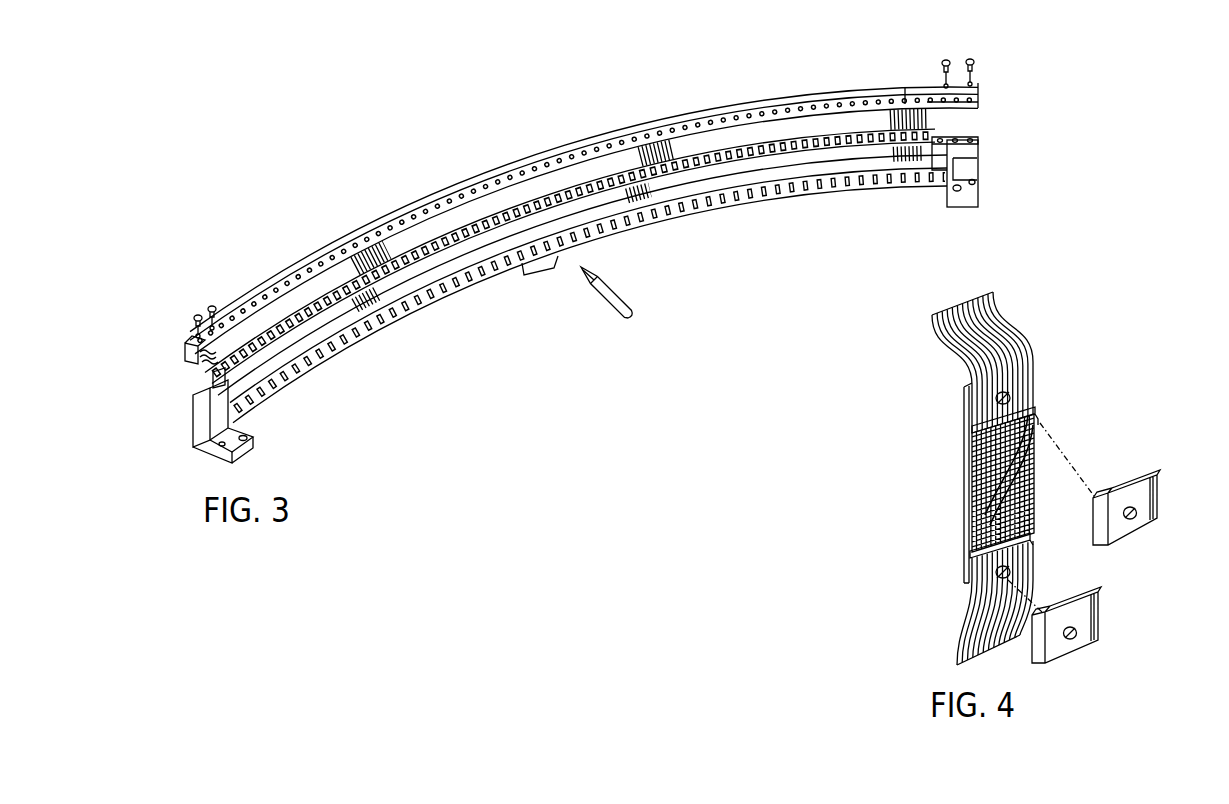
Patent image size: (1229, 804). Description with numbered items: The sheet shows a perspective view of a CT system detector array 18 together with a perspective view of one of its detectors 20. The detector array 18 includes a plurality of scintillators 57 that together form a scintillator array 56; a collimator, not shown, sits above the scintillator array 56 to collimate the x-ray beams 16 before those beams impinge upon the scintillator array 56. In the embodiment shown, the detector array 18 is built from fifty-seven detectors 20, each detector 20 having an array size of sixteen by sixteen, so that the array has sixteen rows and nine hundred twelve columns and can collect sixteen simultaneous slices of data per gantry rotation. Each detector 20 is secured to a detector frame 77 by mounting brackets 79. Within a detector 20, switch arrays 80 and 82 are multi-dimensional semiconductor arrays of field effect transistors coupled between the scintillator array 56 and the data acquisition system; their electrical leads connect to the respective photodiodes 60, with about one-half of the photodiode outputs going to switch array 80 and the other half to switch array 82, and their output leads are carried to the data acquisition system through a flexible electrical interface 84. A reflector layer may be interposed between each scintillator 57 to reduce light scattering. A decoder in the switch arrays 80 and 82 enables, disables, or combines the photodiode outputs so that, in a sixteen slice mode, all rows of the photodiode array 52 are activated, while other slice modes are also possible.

In FIG. 3, the x-ray beams 16 is at (610, 306).
In FIG. 3, the detector array 18 is at (487, 162).
In FIG. 3, the detector 20 is at (364, 247).
In FIG. 4, the detector 20 is at (1057, 478).
In FIG. 3, the photodiode array 52 is at (938, 128).
In FIG. 4, the photodiode array 52 is at (961, 543).
In FIG. 3, the scintillator array 56 is at (840, 159).
In FIG. 4, the scintillator array 56 is at (1001, 483).
In FIG. 4, the scintillator 57 is at (1036, 521).
In FIG. 4, the photodiode 60 is at (972, 482).
In FIG. 3, the detector frame 77 is at (215, 378).
In FIG. 4, the mounting bracket 79 is at (1143, 492).
In FIG. 4, the switch array 80 is at (972, 430).
In FIG. 4, the switch array 82 is at (1033, 548).
In FIG. 4, the flexible electrical interface 84 is at (1023, 343).